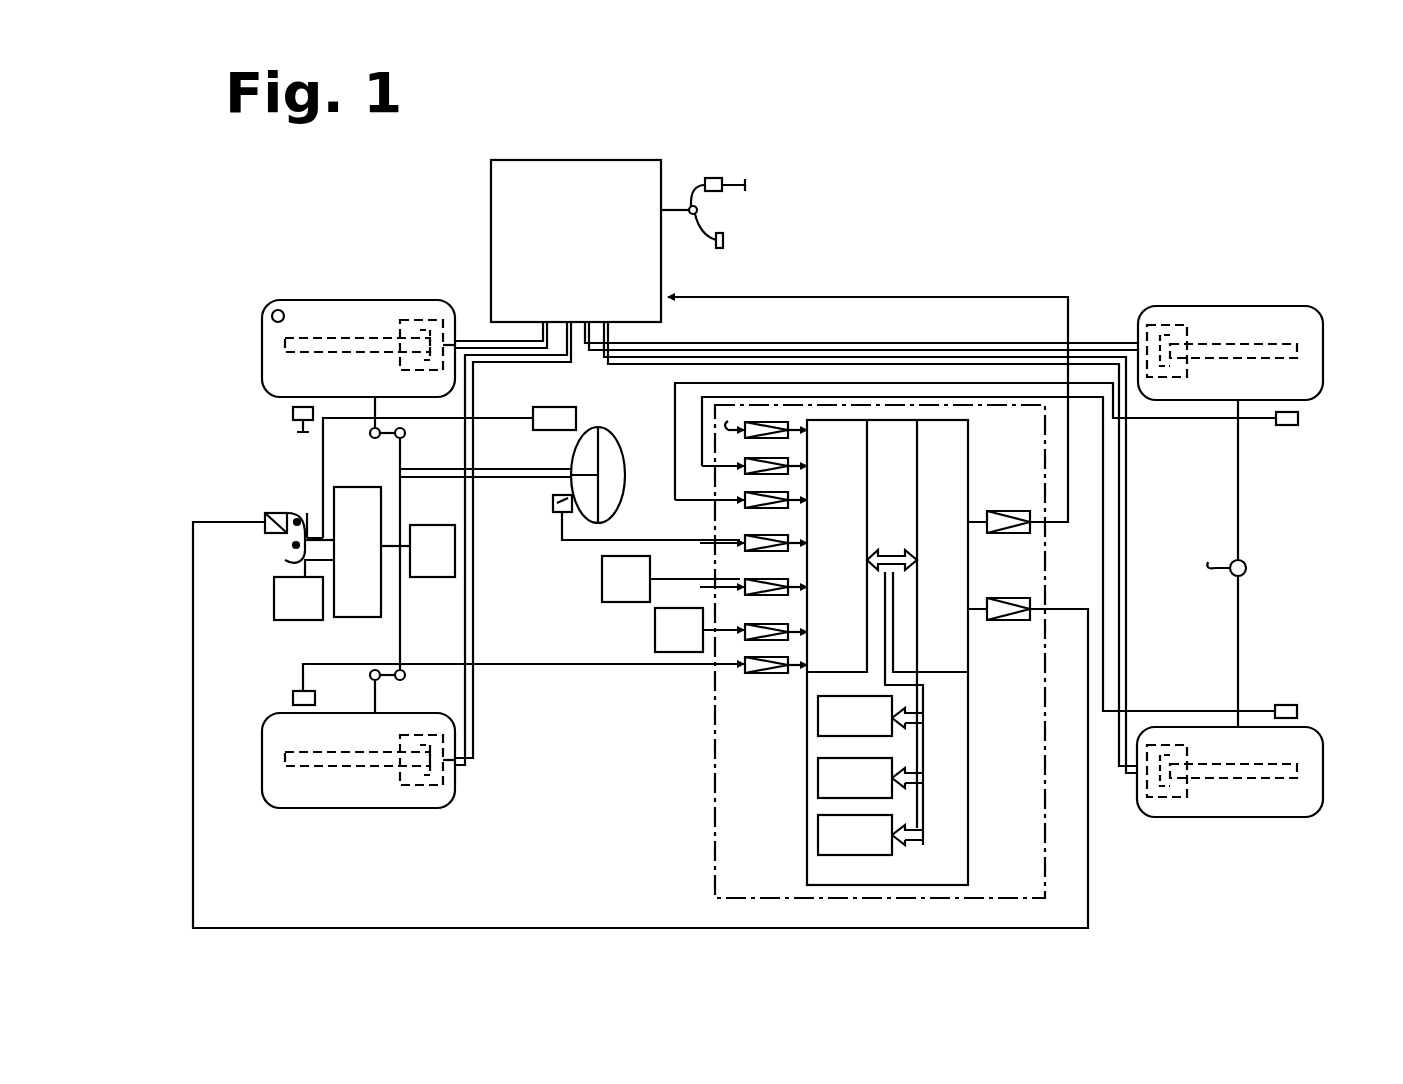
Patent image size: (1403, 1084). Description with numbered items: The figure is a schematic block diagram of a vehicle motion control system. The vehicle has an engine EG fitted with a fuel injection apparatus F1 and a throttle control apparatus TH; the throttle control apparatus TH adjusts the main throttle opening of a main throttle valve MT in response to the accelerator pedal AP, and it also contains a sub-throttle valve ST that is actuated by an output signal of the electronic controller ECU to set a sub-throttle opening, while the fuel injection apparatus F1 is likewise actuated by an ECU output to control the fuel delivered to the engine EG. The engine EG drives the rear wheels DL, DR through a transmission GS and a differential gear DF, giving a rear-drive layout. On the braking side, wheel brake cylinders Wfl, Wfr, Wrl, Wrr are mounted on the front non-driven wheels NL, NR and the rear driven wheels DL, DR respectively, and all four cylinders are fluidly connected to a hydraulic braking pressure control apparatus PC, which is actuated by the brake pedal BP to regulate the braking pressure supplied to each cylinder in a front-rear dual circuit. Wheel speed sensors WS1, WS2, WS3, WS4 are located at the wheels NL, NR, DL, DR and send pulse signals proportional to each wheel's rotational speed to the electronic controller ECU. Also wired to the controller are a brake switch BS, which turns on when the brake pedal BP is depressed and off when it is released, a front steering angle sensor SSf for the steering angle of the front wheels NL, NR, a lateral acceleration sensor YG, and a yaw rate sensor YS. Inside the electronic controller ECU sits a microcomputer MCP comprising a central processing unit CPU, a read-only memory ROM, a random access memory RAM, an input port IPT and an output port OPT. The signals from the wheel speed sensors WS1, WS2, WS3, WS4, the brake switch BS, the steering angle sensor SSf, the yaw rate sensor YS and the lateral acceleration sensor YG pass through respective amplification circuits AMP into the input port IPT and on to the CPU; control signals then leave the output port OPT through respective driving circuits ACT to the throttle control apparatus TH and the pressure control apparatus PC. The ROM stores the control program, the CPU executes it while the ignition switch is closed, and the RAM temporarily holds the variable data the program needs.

The hydraulic braking pressure control apparatus PC is at (661, 276).
The brake switch BS is at (722, 178).
The brake pedal BP is at (703, 227).
The front right wheel NR is at (283, 300).
The front left wheel NL is at (305, 808).
The rear right wheel DR is at (1277, 306).
The rear left wheel DL is at (1280, 817).
The wheel brake cylinder Wfr is at (420, 323).
The wheel brake cylinder Wfl is at (430, 782).
The wheel brake cylinder Wrr is at (1160, 330).
The wheel brake cylinder Wrl is at (1165, 800).
The wheel speed sensor WS1 is at (293, 698).
The wheel speed sensor WS2 is at (293, 413).
The wheel speed sensor WS3 is at (1290, 705).
The wheel speed sensor WS4 is at (1290, 430).
The differential gear DF is at (1246, 568).
The engine EG is at (352, 500).
The transmission GS is at (418, 551).
The fuel injection apparatus F1 is at (304, 590).
The sub-throttle valve ST is at (265, 515).
The throttle control apparatus TH is at (298, 505).
The main throttle valve MT is at (285, 558).
The accelerator pedal AP is at (560, 410).
The front steering angle sensor SSf is at (552, 512).
The yaw rate sensor YS is at (671, 579).
The lateral acceleration sensor YG is at (697, 630).
The electronic controller ECU is at (715, 715).
The amplification circuit AMP is at (765, 685).
The microcomputer MCP is at (968, 865).
The input port IPT is at (853, 453).
The output port OPT is at (962, 453).
The central processing unit CPU is at (855, 716).
The read-only memory ROM is at (855, 778).
The random access memory RAM is at (855, 835).
The driving circuit ACT is at (1010, 511).